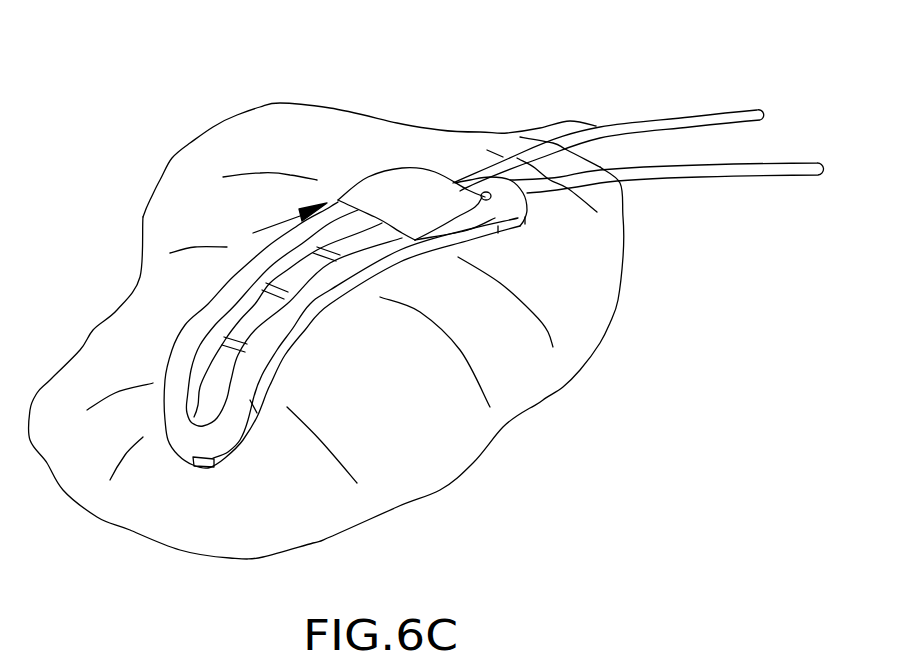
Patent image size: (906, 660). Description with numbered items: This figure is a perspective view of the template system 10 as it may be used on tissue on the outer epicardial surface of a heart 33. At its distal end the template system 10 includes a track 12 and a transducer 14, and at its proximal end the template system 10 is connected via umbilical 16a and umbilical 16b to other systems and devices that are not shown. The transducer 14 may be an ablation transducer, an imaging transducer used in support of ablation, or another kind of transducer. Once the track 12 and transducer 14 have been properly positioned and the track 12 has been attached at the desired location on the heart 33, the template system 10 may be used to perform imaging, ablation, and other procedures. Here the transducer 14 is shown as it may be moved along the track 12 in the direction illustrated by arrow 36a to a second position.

The template system 10 is at (441, 138).
The track 12 is at (300, 333).
The transducer 14 is at (424, 203).
The umbilical 16a is at (768, 163).
The umbilical 16b is at (688, 117).
The heart 33 is at (503, 427).
The arrow 36a is at (275, 223).